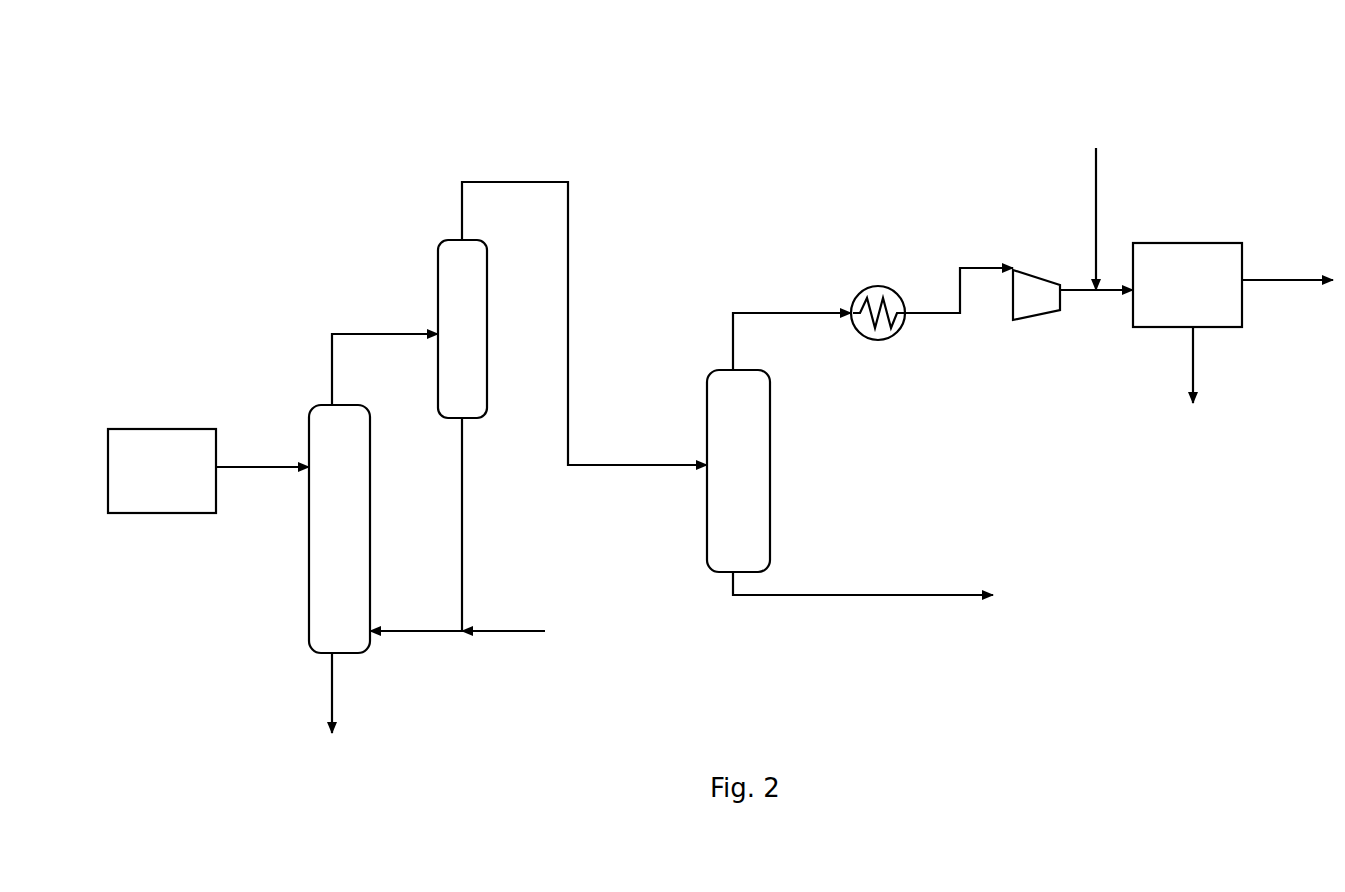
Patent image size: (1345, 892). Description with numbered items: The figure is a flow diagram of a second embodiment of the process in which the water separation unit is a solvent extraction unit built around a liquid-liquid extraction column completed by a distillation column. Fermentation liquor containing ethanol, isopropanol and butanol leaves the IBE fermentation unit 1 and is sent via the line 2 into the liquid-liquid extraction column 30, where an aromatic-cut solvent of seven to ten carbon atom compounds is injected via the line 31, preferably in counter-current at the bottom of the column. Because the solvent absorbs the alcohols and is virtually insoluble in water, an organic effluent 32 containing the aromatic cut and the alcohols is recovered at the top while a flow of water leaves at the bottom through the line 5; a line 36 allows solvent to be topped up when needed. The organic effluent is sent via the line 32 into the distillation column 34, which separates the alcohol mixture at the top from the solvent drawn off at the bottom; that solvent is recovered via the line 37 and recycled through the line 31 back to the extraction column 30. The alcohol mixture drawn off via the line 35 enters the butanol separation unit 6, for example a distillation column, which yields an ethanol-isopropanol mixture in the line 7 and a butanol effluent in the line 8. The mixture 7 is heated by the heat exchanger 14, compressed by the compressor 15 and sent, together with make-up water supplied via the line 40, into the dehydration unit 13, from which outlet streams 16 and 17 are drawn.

The IBE fermentation unit 1 is at (160, 515).
The line 2 is at (232, 462).
The liquid-liquid extraction column 30 is at (318, 404).
The line 31 is at (395, 630).
The organic effluent line 32 is at (360, 333).
The distillation column 34 is at (437, 258).
The line 35 is at (527, 180).
The line 36 is at (525, 633).
The line 37 is at (462, 532).
The line 5 is at (332, 687).
The butanol separation unit 6 is at (770, 477).
The line 7 is at (775, 312).
The line 8 is at (855, 595).
The dehydration unit 13 is at (1195, 243).
The heat exchanger 14 is at (880, 341).
The compressor 15 is at (1027, 275).
The product outlet line 16 is at (1270, 280).
The bottom outlet line 17 is at (1193, 348).
The line 40 is at (1097, 195).